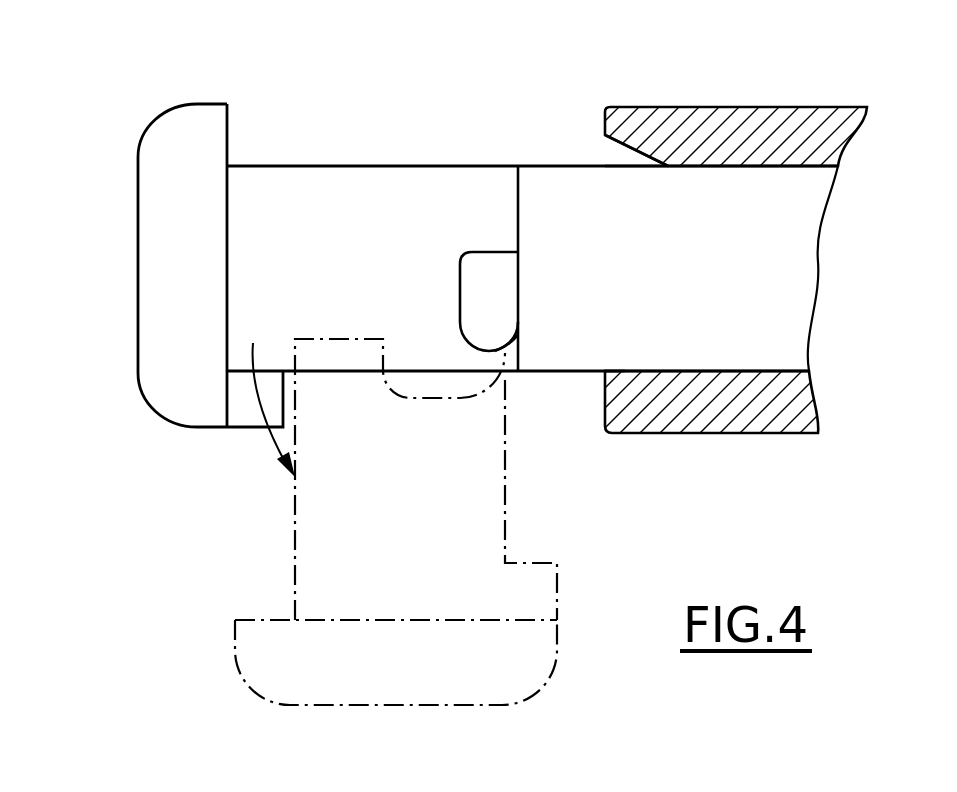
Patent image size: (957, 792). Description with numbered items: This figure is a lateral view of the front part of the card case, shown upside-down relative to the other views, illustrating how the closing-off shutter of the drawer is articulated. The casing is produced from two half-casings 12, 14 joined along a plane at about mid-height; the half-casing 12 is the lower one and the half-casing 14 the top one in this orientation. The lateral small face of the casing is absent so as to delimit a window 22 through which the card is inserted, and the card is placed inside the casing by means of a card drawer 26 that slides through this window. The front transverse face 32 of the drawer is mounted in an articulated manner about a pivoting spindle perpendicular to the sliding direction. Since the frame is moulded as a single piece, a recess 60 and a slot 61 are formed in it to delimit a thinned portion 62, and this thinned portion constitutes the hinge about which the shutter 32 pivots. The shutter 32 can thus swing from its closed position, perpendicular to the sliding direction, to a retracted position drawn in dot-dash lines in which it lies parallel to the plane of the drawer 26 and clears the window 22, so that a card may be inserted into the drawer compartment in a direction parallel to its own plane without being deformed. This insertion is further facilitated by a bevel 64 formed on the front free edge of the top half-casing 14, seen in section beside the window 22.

The half-casing 12 is at (692, 408).
The half-casing 14 is at (643, 118).
The window 22 is at (580, 150).
The card drawer 26 is at (446, 430).
The front transverse face 32 is at (168, 302).
The recess 60 is at (460, 307).
The slot 61 is at (518, 225).
The thinned portion 62 is at (512, 355).
The bevel 64 is at (628, 151).